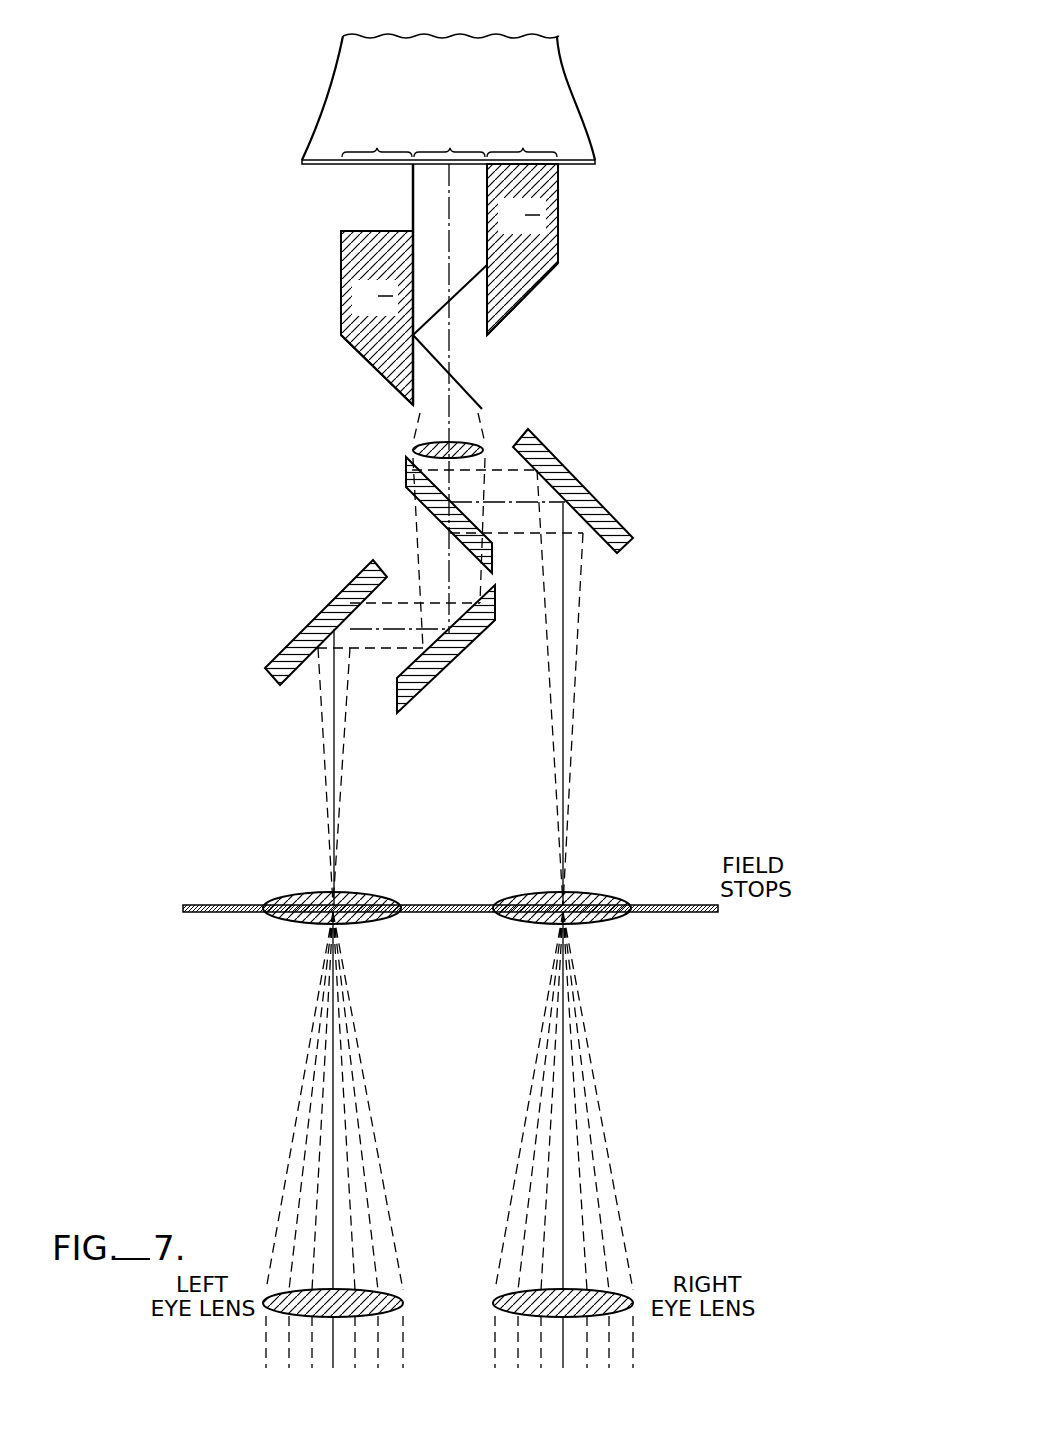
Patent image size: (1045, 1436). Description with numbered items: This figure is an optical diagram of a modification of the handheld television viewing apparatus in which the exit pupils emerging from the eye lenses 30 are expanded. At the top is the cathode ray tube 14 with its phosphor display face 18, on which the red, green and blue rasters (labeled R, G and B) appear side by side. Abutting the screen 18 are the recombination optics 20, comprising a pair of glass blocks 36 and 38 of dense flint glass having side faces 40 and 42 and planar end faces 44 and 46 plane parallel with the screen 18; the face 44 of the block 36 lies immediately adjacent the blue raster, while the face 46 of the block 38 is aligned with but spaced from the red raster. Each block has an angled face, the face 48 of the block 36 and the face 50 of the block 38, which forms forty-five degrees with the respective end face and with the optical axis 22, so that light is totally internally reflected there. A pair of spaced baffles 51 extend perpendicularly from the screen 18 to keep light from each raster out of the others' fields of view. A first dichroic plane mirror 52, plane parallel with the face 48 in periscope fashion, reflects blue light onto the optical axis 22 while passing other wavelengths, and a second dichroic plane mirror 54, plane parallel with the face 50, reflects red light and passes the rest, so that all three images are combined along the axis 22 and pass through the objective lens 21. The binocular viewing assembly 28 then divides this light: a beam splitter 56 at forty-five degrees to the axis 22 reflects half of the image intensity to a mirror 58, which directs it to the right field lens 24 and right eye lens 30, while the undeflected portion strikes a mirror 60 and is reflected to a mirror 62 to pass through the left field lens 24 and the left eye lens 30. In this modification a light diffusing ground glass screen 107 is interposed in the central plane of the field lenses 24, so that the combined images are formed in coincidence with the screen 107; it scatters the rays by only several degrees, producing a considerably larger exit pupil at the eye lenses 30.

The cathode ray tube 14 is at (556, 40).
The phosphor display face 18 is at (585, 158).
The planar end face 44 is at (545, 162).
The baffles 51 is at (413, 196).
The optical axis 22 is at (445, 422).
The recombination optics 20 is at (460, 286).
The side face 42 is at (341, 263).
The planar end face 46 is at (350, 231).
The glass block 38 is at (341, 327).
The face 50 is at (361, 355).
The side face 40 is at (558, 200).
The glass block 36 is at (558, 262).
The face 48 is at (518, 310).
The first dichroic plane mirror 52 is at (485, 268).
The dichroic plane mirror 54 is at (473, 400).
The objective lens 21 is at (473, 444).
The binocular viewing assembly 28 is at (470, 667).
The beam splitter 56 is at (428, 515).
The second mirror 58 is at (615, 522).
The mirror 62 is at (305, 628).
The mirror 60 is at (450, 660).
The light diffusing ground glass screen 107 is at (668, 914).
The field lens 24 is at (272, 905).
The eye lens 30 is at (512, 1292).